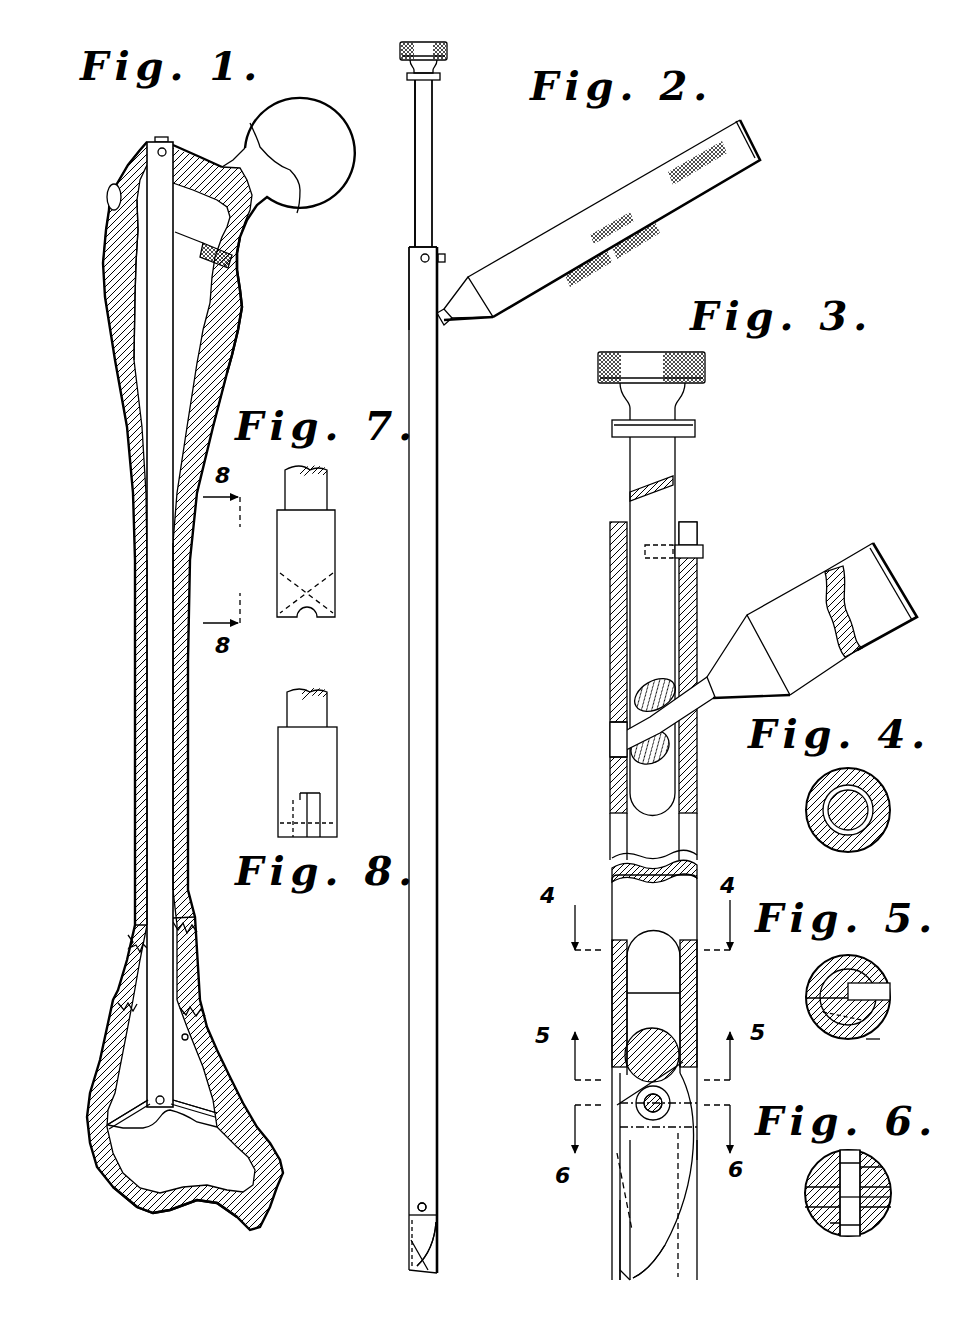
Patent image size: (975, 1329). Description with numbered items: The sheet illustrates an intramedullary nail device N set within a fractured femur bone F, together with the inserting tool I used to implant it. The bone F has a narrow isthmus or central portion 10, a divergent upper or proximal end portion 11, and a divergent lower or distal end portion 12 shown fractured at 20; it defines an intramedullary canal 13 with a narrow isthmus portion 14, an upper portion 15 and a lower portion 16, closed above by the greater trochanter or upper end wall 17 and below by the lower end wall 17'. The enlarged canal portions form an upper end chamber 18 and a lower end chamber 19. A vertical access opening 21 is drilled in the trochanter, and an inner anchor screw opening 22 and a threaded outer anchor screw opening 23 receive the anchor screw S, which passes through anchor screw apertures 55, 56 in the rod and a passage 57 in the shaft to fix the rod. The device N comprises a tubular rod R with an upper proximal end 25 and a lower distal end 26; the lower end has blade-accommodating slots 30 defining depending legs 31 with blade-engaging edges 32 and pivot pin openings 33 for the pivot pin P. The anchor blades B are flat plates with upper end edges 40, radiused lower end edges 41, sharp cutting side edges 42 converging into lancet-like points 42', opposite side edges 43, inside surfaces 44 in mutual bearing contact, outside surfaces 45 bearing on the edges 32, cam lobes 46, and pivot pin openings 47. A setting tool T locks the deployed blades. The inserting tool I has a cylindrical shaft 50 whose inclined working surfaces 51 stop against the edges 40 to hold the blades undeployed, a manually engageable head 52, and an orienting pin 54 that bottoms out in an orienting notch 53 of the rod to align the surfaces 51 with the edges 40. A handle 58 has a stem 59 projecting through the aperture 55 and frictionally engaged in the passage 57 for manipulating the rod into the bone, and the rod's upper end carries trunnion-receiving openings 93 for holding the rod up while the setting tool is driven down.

In FIG. 1, the isthmus or central portion 10 is at (135, 633).
In FIG. 1, the upper or proximal end portion 11 is at (103, 267).
In FIG. 1, the lower or distal end portion 12 is at (110, 1040).
In FIG. 1, the intramedullary canal 13 is at (197, 373).
In FIG. 1, the narrow isthmus portion 14 is at (173, 665).
In FIG. 1, the upper portion of canal 15 is at (205, 297).
In FIG. 1, the lower portion of canal 16 is at (188, 1037).
In FIG. 1, the greater trochanter or upper end wall 17 is at (250, 170).
In FIG. 1, the lower end wall 17' is at (175, 1219).
In FIG. 1, the upper end chamber 18 is at (140, 312).
In FIG. 1, the lower end chamber 19 is at (200, 1163).
In FIG. 1, the fracture 20 is at (130, 947).
In FIG. 1, the vertical access opening 21 is at (152, 165).
In FIG. 1, the inner anchor screw opening 22 is at (115, 223).
In FIG. 1, the threaded outer anchor screw opening 23 is at (241, 277).
In FIG. 2, the upper proximal end of rod 25 is at (417, 243).
In FIG. 3, the upper proximal end of rod 25 is at (607, 522).
In FIG. 1, the lower distal end of rod 26 is at (160, 1113).
In FIG. 2, the lower distal end of rod 26 is at (430, 1217).
In FIG. 3, the blade-accommodating slots 30 is at (623, 1075).
In FIG. 5, the blade-accommodating slots 30 is at (887, 998).
In FIG. 2, the depending legs 31 is at (438, 1200).
In FIG. 5, the depending legs 31 is at (873, 1040).
In FIG. 6, the depending legs 31 is at (883, 1167).
In FIG. 5, the blade-engaging edges 32 is at (810, 1007).
In FIG. 6, the blade-engaging edges 32 is at (885, 1190).
In FIG. 6, the pivot pin openings 33 is at (840, 1163).
In FIG. 3, the upper end edges 40 is at (648, 1056).
In FIG. 3, the lower end edges 41 is at (648, 1258).
In FIG. 3, the side edges 42 is at (612, 1190).
In FIG. 1, the lancet-like points 42' is at (170, 1137).
In FIG. 3, the lancet-like points 42' is at (578, 1270).
In FIG. 3, the side edges 43 is at (697, 1150).
In FIG. 3, the inside surfaces 44 is at (681, 1250).
In FIG. 3, the outside surfaces 45 is at (637, 1187).
In FIG. 3, the cam lobes 46 is at (683, 1033).
In FIG. 3, the pivot pin openings 47 is at (640, 1115).
In FIG. 6, the pivot pin openings 47 is at (888, 1210).
In FIG. 2, the cylindrical shaft 50 is at (437, 183).
In FIG. 7, the cylindrical shaft 50 is at (330, 488).
In FIG. 8, the cylindrical shaft 50 is at (287, 707).
In FIG. 3, the cylindrical shaft 50 is at (640, 465).
In FIG. 4, the cylindrical shaft 50 is at (866, 800).
In FIG. 7, the working surfaces 51 is at (280, 590).
In FIG. 8, the working surfaces 51 is at (280, 805).
In FIG. 3, the working surfaces 51 is at (652, 1115).
In FIG. 5, the working surfaces 51 is at (867, 983).
In FIG. 2, the head 52 is at (447, 43).
In FIG. 3, the head 52 is at (708, 365).
In FIG. 3, the orienting notch 53 is at (693, 527).
In FIG. 2, the orienting pin 54 is at (447, 257).
In FIG. 3, the orienting pin 54 is at (703, 548).
In FIG. 3, the anchor screw aperture 55 is at (702, 700).
In FIG. 3, the anchor screw aperture 56 is at (617, 742).
In FIG. 3, the passage 57 is at (632, 707).
In FIG. 2, the handle 58 is at (760, 160).
In FIG. 3, the handle 58 is at (872, 543).
In FIG. 2, the stem 59 is at (441, 324).
In FIG. 3, the stem 59 is at (717, 685).
In FIG. 1, the trunnion-receiving openings 93 is at (168, 148).
In FIG. 2, the trunnion-receiving openings 93 is at (421, 258).
In FIG. 1, the setting tool T is at (166, 136).
In FIG. 1, the anchor screw S is at (107, 200).
In FIG. 1, the tubular rod R is at (175, 342).
In FIG. 2, the tubular rod R is at (439, 627).
In FIG. 4, the tubular rod R is at (806, 800).
In FIG. 5, the tubular rod R is at (806, 978).
In FIG. 6, the tubular rod R is at (893, 1143).
In FIG. 1, the femur bone F is at (228, 373).
In FIG. 1, the intramedullary nail device N is at (147, 573).
In FIG. 2, the intramedullary nail device N is at (409, 652).
In FIG. 3, the intramedullary nail device N is at (608, 660).
In FIG. 2, the inserting tool I is at (434, 150).
In FIG. 7, the inserting tool I is at (333, 553).
In FIG. 8, the inserting tool I is at (340, 743).
In FIG. 5, the inserting tool I is at (852, 1028).
In FIG. 1, the pivot pin P is at (165, 1094).
In FIG. 2, the pivot pin P is at (413, 1207).
In FIG. 3, the pivot pin P is at (642, 1108).
In FIG. 6, the pivot pin P is at (829, 1213).
In FIG. 1, the anchor blades B is at (204, 1105).
In FIG. 2, the anchor blades B is at (408, 1233).
In FIG. 3, the anchor blades B is at (612, 1233).
In FIG. 6, the anchor blades B is at (806, 1187).